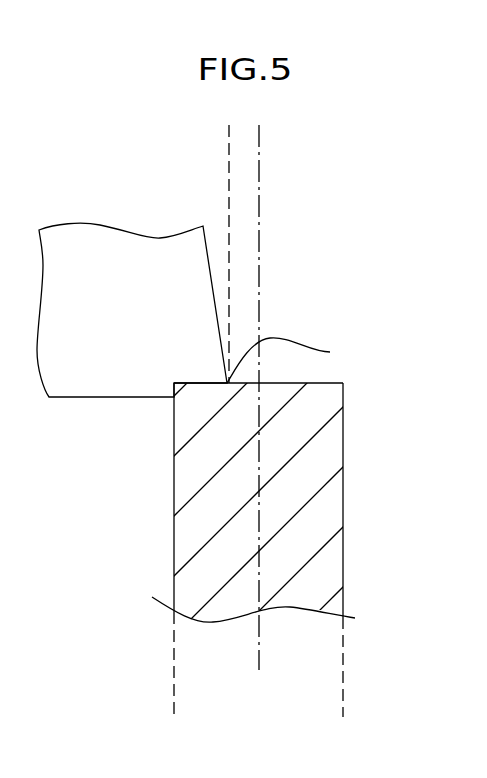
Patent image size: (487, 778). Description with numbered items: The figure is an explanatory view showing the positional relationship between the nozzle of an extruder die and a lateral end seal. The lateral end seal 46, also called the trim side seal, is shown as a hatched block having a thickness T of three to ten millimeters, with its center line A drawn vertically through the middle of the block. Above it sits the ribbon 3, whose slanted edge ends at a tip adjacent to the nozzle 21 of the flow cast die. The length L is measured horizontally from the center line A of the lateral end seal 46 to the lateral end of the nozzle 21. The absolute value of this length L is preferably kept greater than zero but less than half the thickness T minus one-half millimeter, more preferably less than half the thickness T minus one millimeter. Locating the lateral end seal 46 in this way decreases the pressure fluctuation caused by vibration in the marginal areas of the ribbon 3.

The ribbon 3 is at (87, 375).
The nozzle 21 is at (330, 352).
The lateral end seal 46 is at (343, 538).
The length L is at (175, 155).
The center line A is at (259, 645).
The thickness T is at (343, 690).